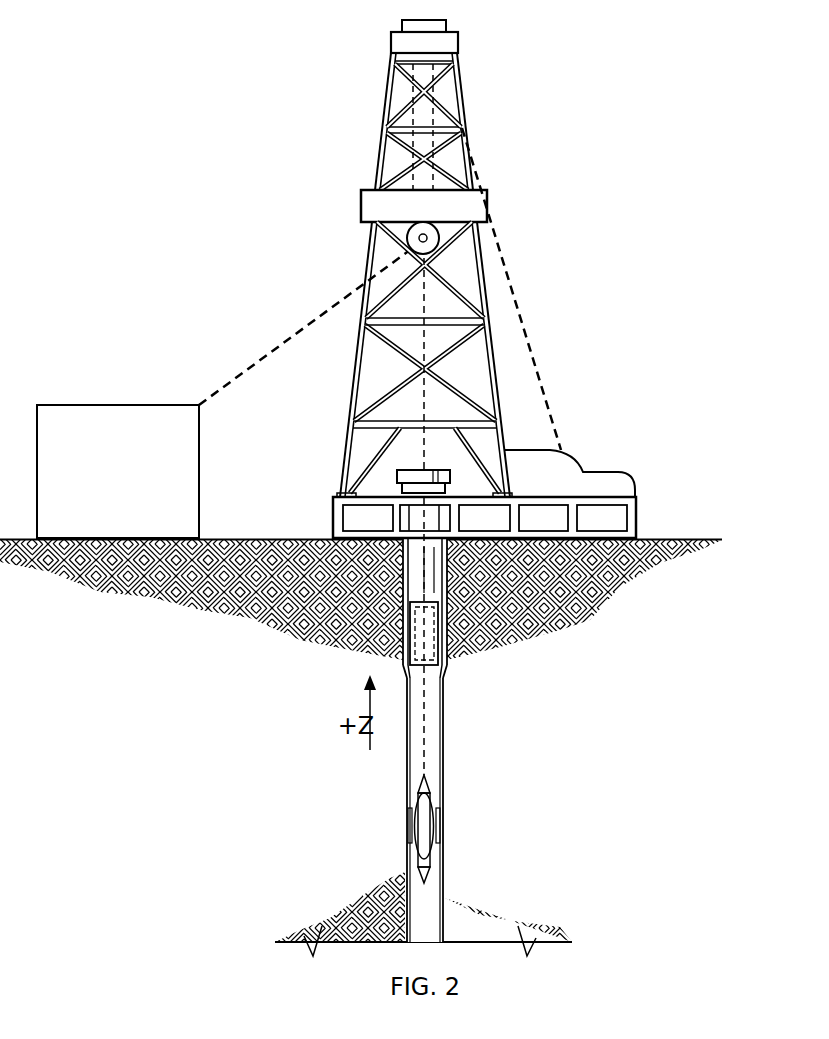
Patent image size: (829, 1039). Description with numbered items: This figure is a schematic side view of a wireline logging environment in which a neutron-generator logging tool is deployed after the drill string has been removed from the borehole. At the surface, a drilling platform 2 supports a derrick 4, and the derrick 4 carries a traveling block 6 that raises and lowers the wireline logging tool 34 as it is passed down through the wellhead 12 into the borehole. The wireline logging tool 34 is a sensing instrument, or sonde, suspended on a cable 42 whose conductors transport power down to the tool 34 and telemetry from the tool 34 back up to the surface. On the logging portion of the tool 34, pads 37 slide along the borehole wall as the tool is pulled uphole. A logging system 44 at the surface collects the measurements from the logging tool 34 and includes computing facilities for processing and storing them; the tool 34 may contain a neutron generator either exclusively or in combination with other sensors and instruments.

The drilling platform 2 is at (333, 518).
The derrick 4 is at (356, 363).
The traveling block 6 is at (431, 250).
The wellhead 12 is at (410, 468).
The wireline logging tool 34 is at (433, 860).
The pads 37 is at (438, 823).
The cable 42 is at (302, 328).
The logging system 44 is at (118, 403).